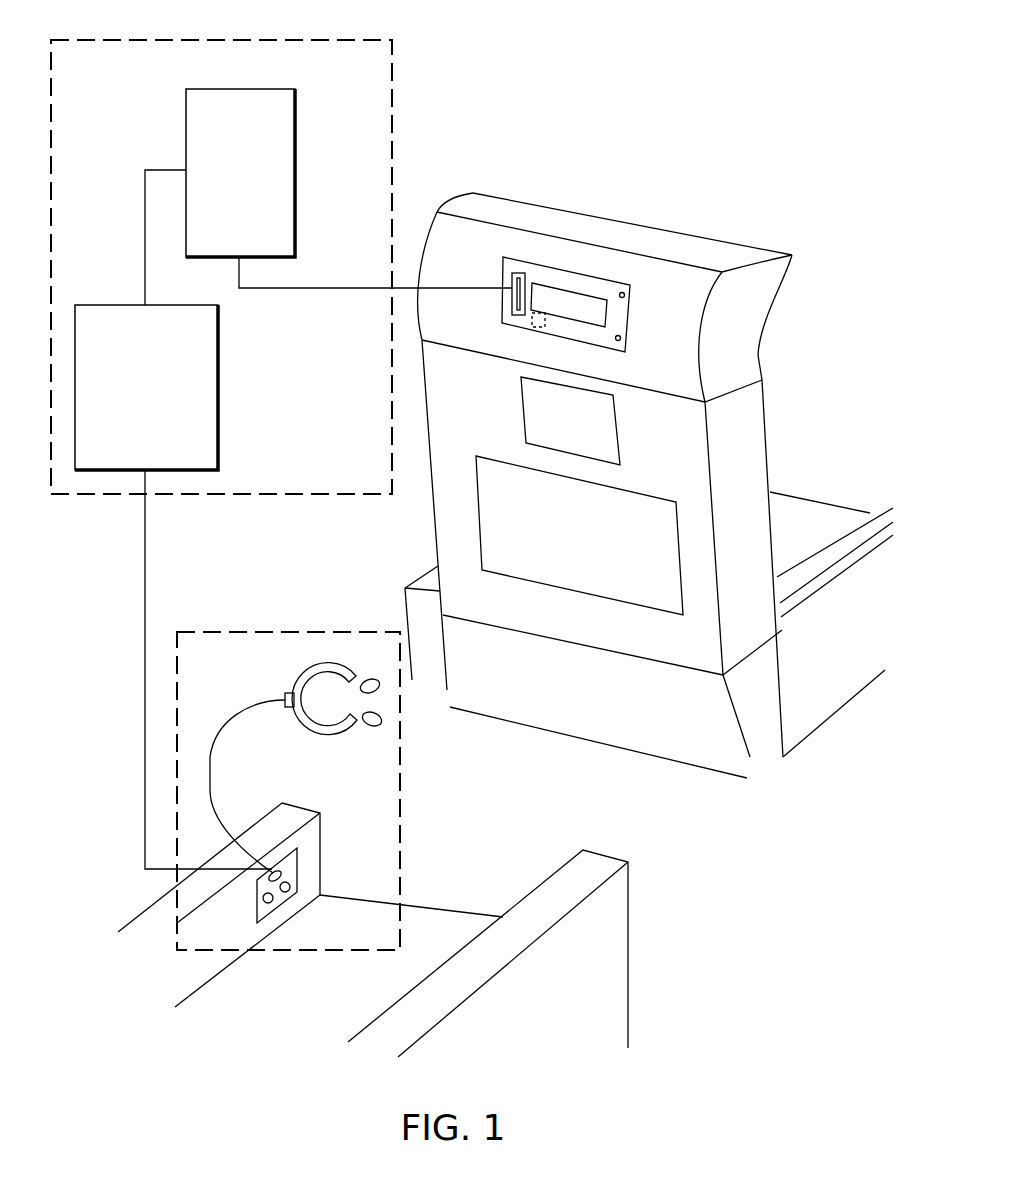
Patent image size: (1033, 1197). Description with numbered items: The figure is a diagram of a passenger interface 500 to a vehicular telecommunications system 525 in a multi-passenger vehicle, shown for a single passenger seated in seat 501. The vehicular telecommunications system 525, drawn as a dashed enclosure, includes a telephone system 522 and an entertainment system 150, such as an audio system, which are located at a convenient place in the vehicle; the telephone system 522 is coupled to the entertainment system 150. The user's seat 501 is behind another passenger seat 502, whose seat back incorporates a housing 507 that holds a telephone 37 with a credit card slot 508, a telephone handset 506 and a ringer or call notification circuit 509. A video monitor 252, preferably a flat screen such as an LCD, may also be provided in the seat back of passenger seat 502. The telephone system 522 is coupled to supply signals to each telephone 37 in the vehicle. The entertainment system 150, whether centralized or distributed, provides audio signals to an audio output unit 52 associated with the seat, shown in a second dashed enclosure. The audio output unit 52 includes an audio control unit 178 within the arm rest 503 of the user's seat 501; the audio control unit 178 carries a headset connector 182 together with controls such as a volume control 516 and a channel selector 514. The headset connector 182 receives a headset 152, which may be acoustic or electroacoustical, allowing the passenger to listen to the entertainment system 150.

The passenger interface 500 is at (553, 78).
The vehicular telecommunications system 525 is at (338, 38).
The telephone system 522 is at (278, 88).
The entertainment system 150 is at (220, 375).
The passenger seat 502 is at (605, 212).
The housing 507 is at (632, 288).
The telephone handset 506 is at (552, 283).
The credit card slot 508 is at (512, 275).
The ringer or call notification circuit 509 is at (537, 330).
The telephone 37 is at (617, 340).
The video monitor 252 is at (620, 438).
The audio output unit 52 is at (261, 626).
The headset 152 is at (327, 733).
The arm rest 503 is at (260, 818).
The audio control unit 178 is at (300, 862).
The headset connector 182 is at (283, 870).
The volume control 516 is at (256, 905).
The channel selector 514 is at (288, 893).
The seat 501 is at (443, 886).